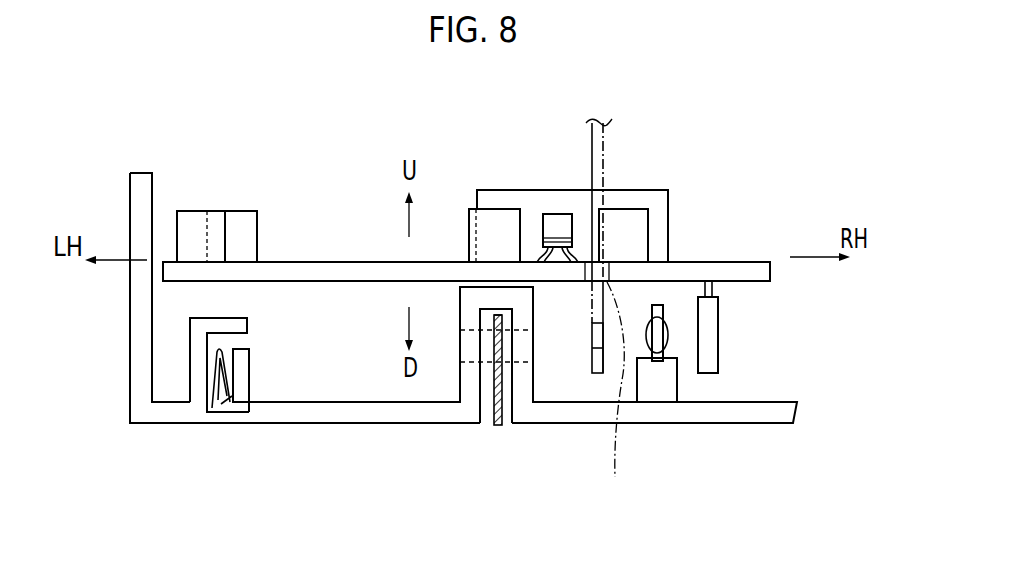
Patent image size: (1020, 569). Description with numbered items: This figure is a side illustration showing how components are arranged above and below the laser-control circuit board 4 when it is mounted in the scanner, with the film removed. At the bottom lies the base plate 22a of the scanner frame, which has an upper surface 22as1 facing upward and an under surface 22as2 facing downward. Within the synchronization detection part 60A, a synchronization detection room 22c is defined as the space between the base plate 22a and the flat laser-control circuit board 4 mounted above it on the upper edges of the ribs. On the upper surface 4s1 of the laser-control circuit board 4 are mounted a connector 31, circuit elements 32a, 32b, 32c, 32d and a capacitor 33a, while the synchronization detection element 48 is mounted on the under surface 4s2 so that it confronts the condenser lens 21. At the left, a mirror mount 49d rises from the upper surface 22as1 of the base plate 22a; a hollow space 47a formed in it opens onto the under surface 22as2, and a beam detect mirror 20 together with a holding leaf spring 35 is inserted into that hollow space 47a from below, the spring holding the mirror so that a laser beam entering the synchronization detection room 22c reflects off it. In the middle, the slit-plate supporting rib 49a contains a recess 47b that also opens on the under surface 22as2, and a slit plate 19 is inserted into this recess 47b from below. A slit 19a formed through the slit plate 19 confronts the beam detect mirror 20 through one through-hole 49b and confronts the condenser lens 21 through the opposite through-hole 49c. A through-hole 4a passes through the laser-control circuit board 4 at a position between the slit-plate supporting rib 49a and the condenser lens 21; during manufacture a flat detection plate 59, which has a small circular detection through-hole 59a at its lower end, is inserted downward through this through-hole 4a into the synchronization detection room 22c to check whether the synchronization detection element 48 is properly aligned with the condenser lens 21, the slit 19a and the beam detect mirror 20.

The laser-control circuit board 4 is at (308, 262).
The upper surface of laser-control circuit board 4s1 is at (732, 262).
The under surface of laser-control circuit board 4s2 is at (748, 282).
The through-hole 4a is at (607, 284).
The slit plate 19 is at (490, 418).
The slit 19a is at (493, 342).
The beam detect mirror 20 is at (247, 362).
The condenser lens 21 is at (660, 364).
The base plate 22a is at (753, 424).
The upper surface of base plate 22as1 is at (760, 400).
The under surface of base plate 22as2 is at (775, 424).
The synchronization detection room 22c is at (166, 350).
The connector 31 is at (633, 190).
The circuit element 32a is at (492, 208).
The circuit element 32b is at (651, 222).
The circuit element 32c is at (193, 211).
The circuit element 32d is at (242, 211).
The capacitor 33a is at (555, 214).
The holding leaf spring 35 is at (216, 417).
The hollow space 47a is at (240, 338).
The recess 47b is at (499, 437).
The synchronization detection element 48 is at (710, 374).
The slit-plate supporting rib 49a is at (472, 392).
The through-hole 49b is at (458, 347).
The through-hole 49c is at (537, 347).
The mirror mount 49d is at (188, 385).
The detection plate 59 is at (591, 364).
The detection through-hole 59a is at (616, 394).
The synchronization detection part 60A is at (165, 455).